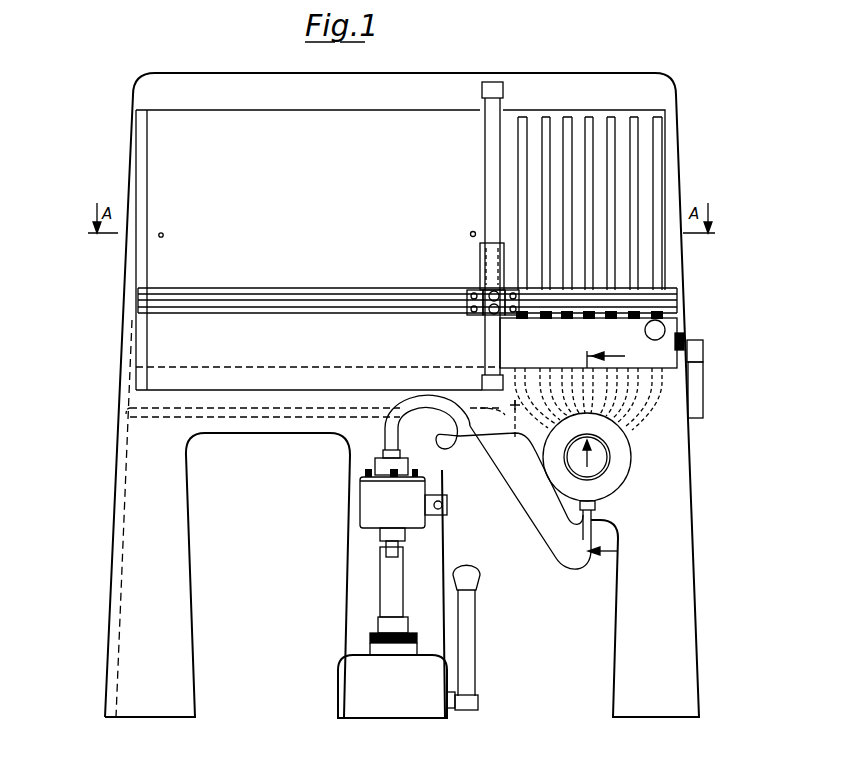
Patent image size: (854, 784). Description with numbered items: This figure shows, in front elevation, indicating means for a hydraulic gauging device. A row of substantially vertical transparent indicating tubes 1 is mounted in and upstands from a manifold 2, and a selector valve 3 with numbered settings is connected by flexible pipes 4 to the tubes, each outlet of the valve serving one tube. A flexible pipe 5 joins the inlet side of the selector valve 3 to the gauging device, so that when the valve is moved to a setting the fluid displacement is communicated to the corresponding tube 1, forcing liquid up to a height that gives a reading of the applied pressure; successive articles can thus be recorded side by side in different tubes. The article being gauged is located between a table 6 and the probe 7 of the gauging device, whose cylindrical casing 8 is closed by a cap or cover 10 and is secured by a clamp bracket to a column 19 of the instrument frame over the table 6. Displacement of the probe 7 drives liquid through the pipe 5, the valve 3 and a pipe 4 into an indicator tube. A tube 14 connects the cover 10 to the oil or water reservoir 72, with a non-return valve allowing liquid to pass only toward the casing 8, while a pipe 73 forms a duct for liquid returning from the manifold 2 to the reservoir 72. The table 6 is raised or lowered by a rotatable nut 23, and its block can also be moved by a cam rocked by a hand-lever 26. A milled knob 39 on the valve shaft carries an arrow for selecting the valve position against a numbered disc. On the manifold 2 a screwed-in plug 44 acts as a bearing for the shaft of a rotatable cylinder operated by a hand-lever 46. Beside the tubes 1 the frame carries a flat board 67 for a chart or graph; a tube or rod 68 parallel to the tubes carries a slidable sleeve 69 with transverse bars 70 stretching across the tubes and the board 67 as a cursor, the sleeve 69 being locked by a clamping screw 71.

The indicating tubes 1 is at (568, 227).
The manifold 2 is at (682, 343).
The selector valve 3 is at (612, 483).
The pipes 4 is at (625, 412).
The flexible pipe 5 is at (546, 565).
The table 6 is at (380, 626).
The probe 7 is at (385, 548).
The cylindrical casing 8 is at (368, 498).
The cap or cover 10 is at (378, 460).
The tube 14 is at (455, 460).
The column 19 is at (388, 586).
The rotatable nut 23 is at (368, 638).
The hand-lever 26 is at (468, 672).
The milled knob 39 is at (600, 460).
The screwed-in plug 44 is at (705, 345).
The hand-lever 46 is at (708, 398).
The flat board 67 is at (195, 128).
The tube or rod 68 is at (490, 140).
The slidable sleeve 69 is at (485, 258).
The transverse bars 70 is at (270, 294).
The clamping screw 71 is at (485, 311).
The reservoir 72 is at (170, 340).
The pipe 73 is at (501, 434).